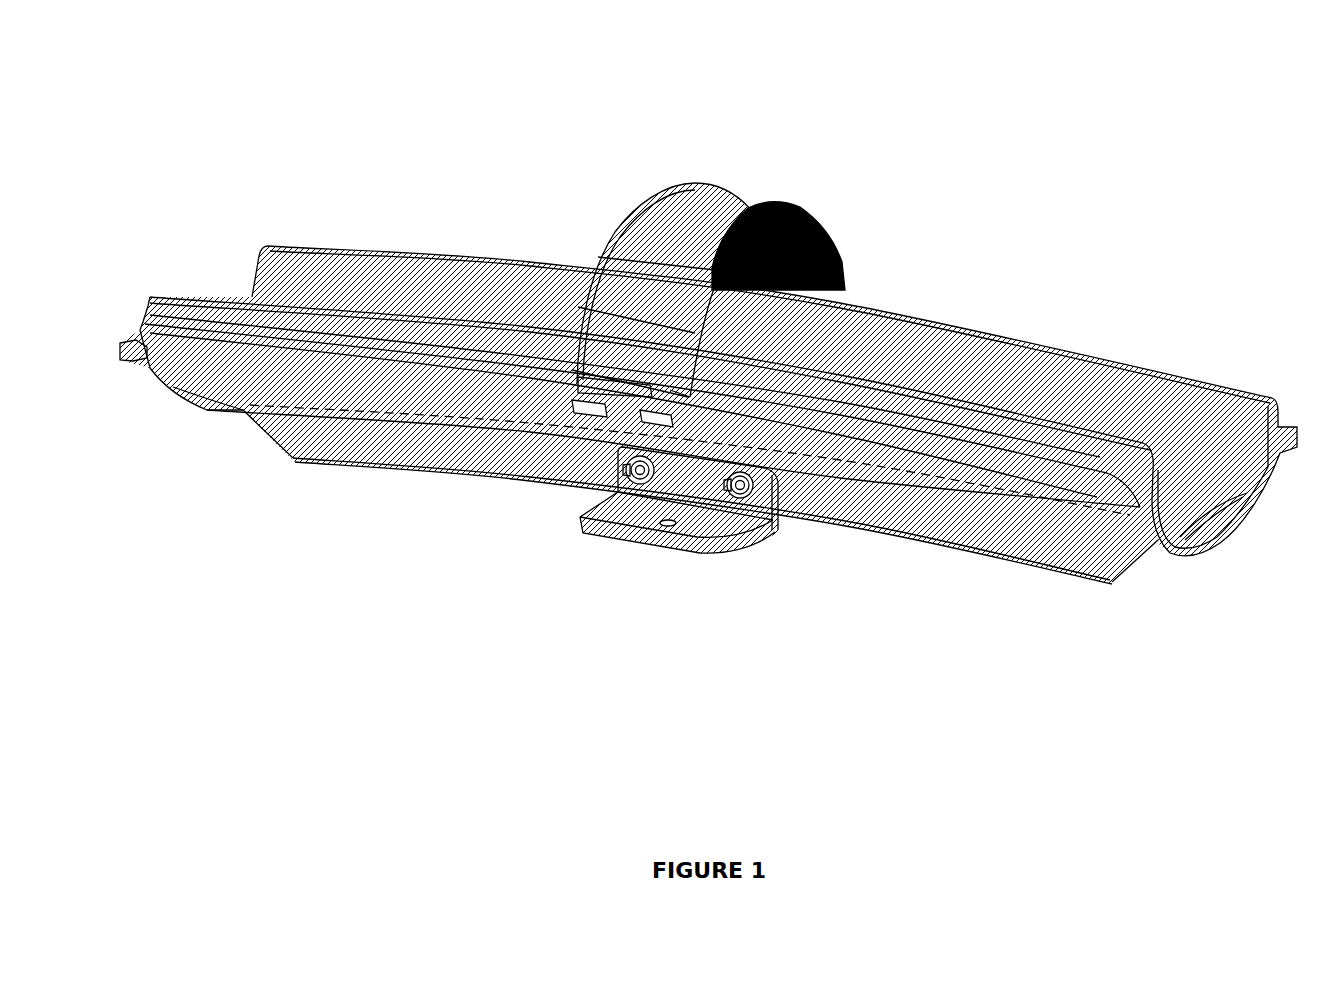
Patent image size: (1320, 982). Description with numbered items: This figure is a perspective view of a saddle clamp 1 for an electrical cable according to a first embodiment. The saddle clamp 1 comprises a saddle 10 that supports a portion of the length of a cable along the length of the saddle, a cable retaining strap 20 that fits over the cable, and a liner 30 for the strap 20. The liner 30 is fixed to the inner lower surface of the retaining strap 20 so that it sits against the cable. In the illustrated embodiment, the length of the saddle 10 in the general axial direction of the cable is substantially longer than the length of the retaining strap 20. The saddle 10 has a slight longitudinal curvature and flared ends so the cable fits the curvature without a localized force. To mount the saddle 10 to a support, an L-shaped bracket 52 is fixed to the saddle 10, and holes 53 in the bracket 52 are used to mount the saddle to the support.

The saddle clamp 1 is at (1005, 128).
The saddle 10 is at (390, 272).
The cable retaining strap 20 is at (692, 200).
The liner 30 is at (840, 246).
The L-shaped bracket 52 is at (728, 532).
The hole in bracket 53 is at (660, 526).